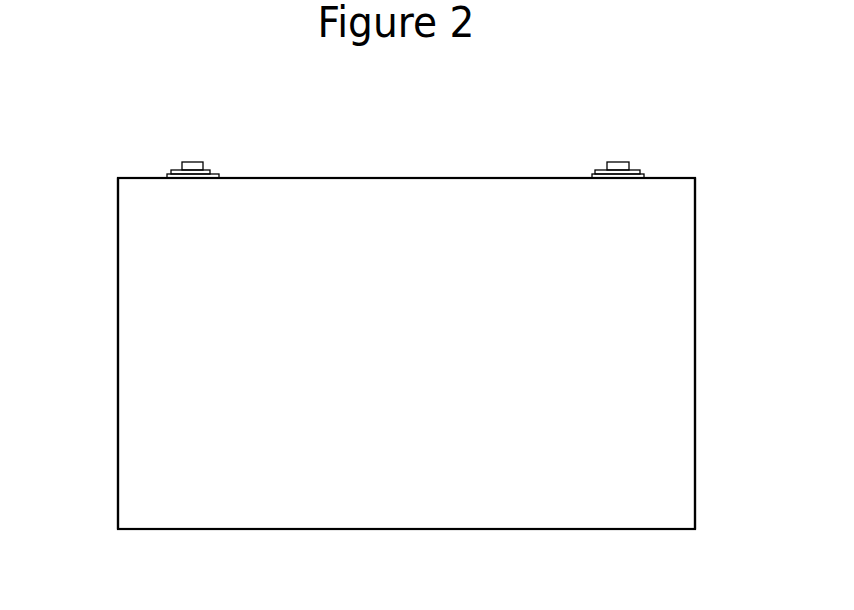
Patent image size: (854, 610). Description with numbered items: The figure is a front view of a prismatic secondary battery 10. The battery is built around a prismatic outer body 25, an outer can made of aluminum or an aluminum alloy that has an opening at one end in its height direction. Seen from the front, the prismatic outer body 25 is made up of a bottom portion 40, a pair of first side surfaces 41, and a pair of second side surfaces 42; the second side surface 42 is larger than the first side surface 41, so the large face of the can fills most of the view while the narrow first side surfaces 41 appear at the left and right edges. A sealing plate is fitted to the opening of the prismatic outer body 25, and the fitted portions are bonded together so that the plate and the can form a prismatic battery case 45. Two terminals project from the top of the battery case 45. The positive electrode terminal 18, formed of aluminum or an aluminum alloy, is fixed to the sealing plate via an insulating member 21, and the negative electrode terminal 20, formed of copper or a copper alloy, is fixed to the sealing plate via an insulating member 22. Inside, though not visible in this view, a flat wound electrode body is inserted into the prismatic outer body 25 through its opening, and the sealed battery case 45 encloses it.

The prismatic secondary battery 10 is at (312, 153).
The positive electrode terminal 18 is at (612, 167).
The negative electrode terminal 20 is at (188, 167).
The insulating member 21 is at (636, 173).
The insulating member 22 is at (210, 173).
The prismatic outer body 25 is at (163, 316).
The bottom portion 40 is at (400, 530).
The first side surfaces 41 is at (118, 248).
The second side surfaces 42 is at (193, 368).
The battery case 45 is at (397, 210).